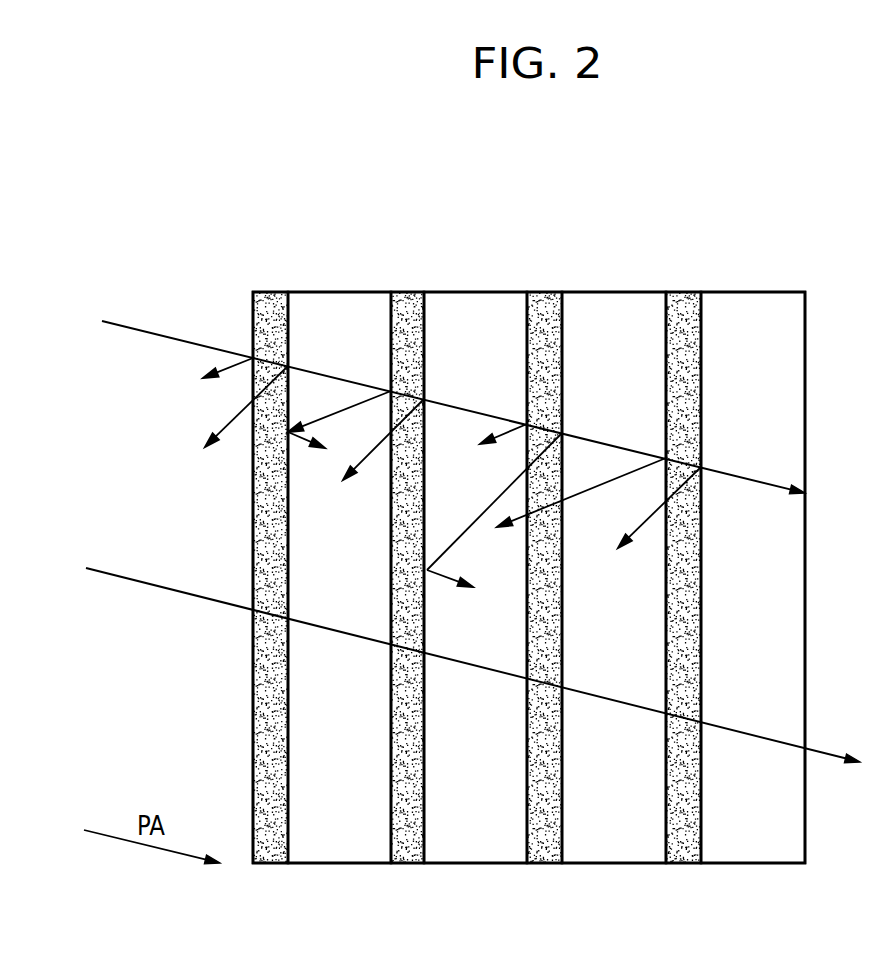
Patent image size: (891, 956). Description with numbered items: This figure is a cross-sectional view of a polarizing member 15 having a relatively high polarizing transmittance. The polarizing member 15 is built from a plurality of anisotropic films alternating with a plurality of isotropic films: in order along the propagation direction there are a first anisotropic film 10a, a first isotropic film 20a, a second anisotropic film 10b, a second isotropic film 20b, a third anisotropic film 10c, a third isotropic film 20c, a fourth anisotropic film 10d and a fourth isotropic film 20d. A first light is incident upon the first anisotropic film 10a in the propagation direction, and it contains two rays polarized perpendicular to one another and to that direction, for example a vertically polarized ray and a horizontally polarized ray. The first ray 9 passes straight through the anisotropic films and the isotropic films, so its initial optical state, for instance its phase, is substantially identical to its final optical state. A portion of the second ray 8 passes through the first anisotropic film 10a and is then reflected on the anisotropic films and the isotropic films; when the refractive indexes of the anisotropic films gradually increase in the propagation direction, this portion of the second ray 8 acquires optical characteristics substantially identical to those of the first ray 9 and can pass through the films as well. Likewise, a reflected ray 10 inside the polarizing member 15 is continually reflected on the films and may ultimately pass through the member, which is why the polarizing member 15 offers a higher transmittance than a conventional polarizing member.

The polarizing member 15 is at (490, 162).
The first anisotropic film 10a is at (268, 302).
The second anisotropic film 10b is at (402, 302).
The third anisotropic film 10c is at (545, 302).
The fourth anisotropic film 10d is at (685, 302).
The first isotropic film 20a is at (342, 305).
The second isotropic film 20b is at (477, 305).
The third isotropic film 20c is at (612, 305).
The fourth isotropic film 20d is at (745, 305).
The second ray 8 is at (164, 336).
The first ray 9 is at (146, 583).
The reflected ray 10 is at (477, 519).